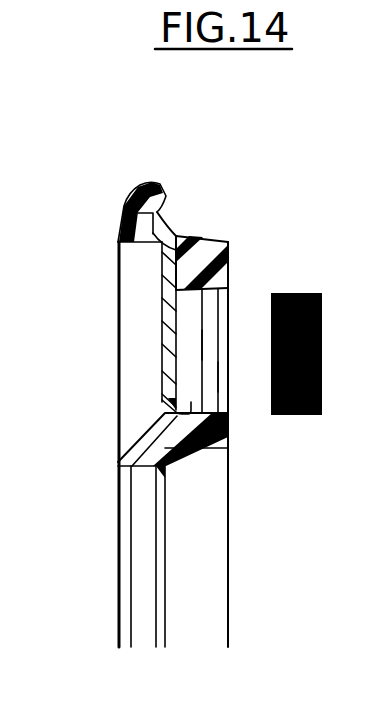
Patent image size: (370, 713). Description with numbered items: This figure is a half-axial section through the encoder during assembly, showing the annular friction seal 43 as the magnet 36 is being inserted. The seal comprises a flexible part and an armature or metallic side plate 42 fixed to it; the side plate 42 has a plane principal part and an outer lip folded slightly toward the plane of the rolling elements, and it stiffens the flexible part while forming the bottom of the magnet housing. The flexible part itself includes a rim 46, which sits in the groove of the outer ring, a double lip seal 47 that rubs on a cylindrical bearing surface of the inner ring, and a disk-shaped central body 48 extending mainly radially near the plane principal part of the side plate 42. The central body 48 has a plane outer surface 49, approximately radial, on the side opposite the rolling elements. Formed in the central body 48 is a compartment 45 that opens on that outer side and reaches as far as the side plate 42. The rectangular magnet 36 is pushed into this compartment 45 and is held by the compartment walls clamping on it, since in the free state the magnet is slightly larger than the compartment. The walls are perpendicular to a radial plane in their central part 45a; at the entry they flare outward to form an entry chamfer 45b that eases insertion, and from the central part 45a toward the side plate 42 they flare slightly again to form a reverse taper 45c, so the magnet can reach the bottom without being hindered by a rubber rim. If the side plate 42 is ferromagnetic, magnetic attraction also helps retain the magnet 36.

The magnet 36 is at (292, 293).
The armature or metallic side plate 42 is at (163, 300).
The annular friction seal 43 is at (114, 181).
The compartment 45 is at (188, 323).
The central part 45a is at (210, 344).
The entry chamfer 45b is at (225, 377).
The reverse taper 45c is at (177, 408).
The rim 46 is at (147, 183).
The double lip seal 47 is at (158, 550).
The disk-shaped central body 48 is at (198, 257).
The plane outer surface 49 is at (230, 252).